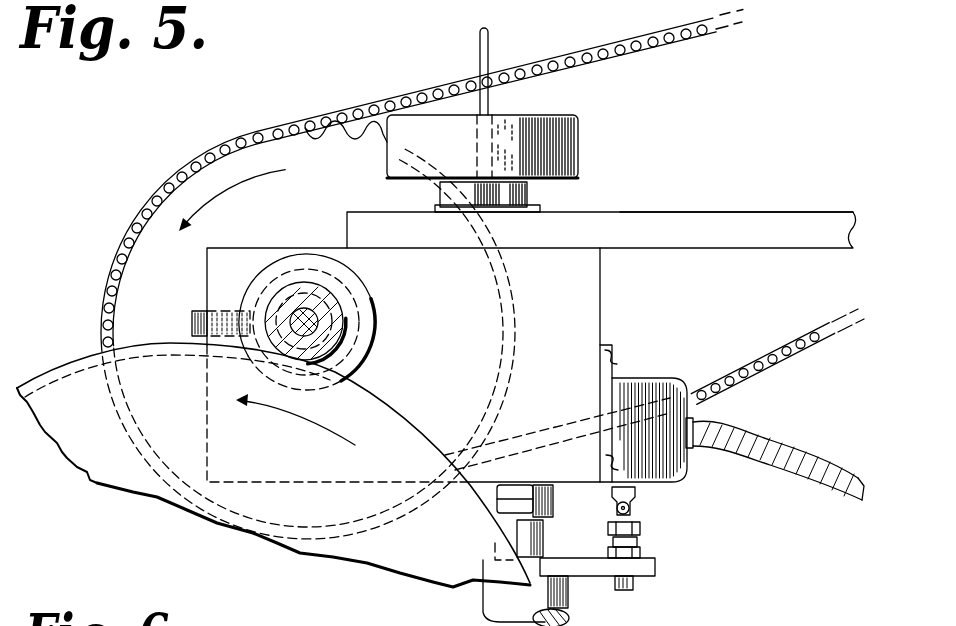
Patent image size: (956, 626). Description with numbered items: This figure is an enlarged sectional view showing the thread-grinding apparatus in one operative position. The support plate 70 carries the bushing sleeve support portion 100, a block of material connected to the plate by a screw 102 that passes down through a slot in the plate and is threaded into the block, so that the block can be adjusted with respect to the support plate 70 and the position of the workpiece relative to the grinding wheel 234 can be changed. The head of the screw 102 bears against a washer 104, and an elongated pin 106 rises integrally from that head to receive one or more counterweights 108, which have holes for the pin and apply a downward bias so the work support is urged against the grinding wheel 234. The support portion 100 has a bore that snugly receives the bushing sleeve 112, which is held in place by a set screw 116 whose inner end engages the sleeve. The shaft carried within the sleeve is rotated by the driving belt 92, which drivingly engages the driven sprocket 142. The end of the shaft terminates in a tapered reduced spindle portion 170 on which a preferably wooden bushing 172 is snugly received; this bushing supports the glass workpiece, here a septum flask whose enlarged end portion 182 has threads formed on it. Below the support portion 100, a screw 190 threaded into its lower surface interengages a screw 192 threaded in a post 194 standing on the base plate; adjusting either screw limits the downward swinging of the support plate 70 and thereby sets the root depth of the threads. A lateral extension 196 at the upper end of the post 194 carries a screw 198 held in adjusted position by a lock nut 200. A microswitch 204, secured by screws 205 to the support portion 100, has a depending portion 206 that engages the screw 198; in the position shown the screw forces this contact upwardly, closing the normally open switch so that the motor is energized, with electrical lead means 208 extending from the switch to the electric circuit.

The support plate 70 is at (743, 242).
The driving belt 92 is at (567, 50).
The bushing sleeve support portion 100 is at (601, 303).
The screw 102 is at (529, 193).
The washer 104 is at (540, 213).
The elongated pin 106 is at (492, 100).
The counterweights 108 is at (578, 141).
The bushing sleeve 112 is at (375, 298).
The set screw 116 is at (192, 318).
The driven sprocket 142 is at (354, 190).
The reduced spindle portion 170 is at (322, 318).
The bushing 172 is at (336, 336).
The enlarged end portion 182 is at (333, 300).
The screw 190 is at (553, 490).
The screw 192 is at (553, 522).
The post 194 is at (580, 600).
The lateral extension 196 is at (655, 570).
The screw 198 is at (642, 530).
The lock nut 200 is at (642, 552).
The microswitch 204 is at (656, 380).
The screws 205 is at (615, 359).
The depending portion 206 is at (640, 508).
The electrical lead means 208 is at (772, 453).
The grinding wheel 234 is at (93, 478).